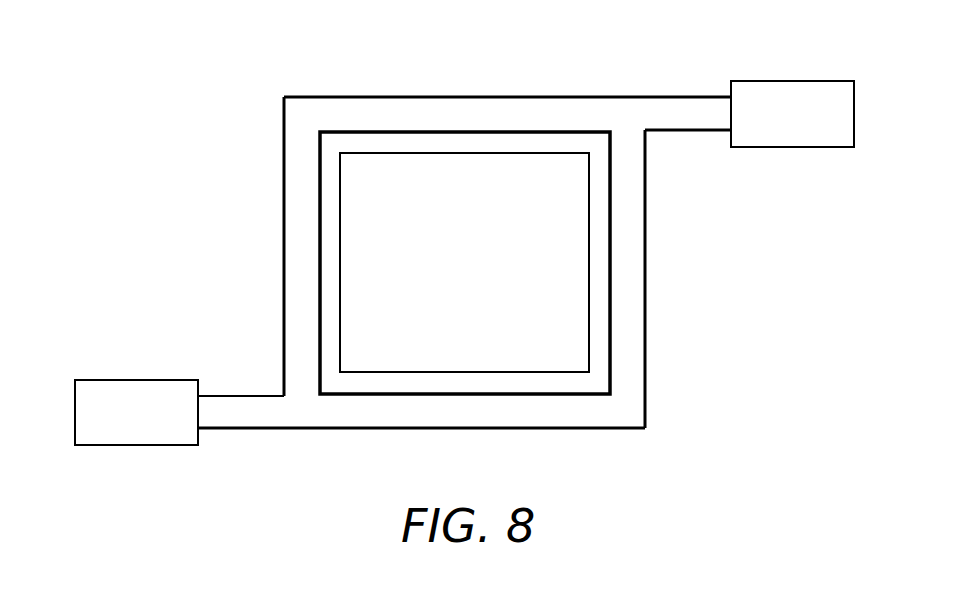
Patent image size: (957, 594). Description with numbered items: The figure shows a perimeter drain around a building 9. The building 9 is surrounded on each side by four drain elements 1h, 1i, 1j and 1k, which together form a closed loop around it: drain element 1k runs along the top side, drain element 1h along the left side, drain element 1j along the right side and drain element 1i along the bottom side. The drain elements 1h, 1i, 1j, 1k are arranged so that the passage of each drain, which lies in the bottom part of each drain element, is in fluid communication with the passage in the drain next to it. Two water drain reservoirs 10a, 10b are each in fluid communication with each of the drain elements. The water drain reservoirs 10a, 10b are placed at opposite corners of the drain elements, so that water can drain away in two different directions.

The drain element 1k is at (464, 105).
The drain element 1h is at (293, 262).
The drain element 1j is at (636, 262).
The drain element 1i is at (466, 419).
The building 9 is at (472, 272).
The water drain reservoir 10a is at (135, 380).
The water drain reservoir 10b is at (791, 81).